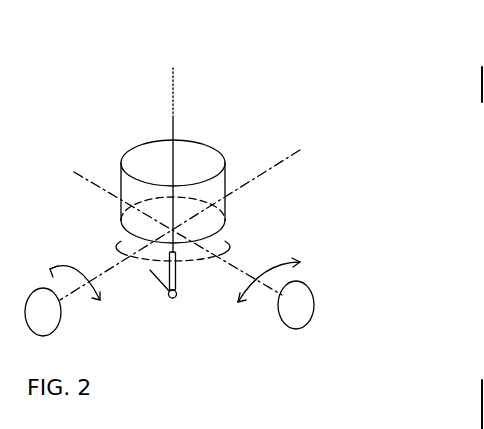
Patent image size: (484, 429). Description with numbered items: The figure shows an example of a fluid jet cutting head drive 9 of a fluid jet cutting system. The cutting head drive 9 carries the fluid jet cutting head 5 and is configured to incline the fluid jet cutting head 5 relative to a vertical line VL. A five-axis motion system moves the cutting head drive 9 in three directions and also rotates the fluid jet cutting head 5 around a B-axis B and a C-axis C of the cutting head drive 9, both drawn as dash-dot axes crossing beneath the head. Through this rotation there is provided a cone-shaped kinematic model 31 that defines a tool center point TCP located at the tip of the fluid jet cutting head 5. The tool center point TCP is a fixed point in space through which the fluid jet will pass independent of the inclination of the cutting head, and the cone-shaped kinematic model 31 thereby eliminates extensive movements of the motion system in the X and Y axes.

The fluid jet cutting head drive 9 is at (224, 111).
The cone-shaped kinematic model 31 is at (145, 261).
The fluid jet cutting head 5 is at (176, 291).
The vertical line VL is at (173, 80).
The B-axis B is at (72, 172).
The C-axis C is at (302, 150).
The tool center point TCP is at (166, 304).